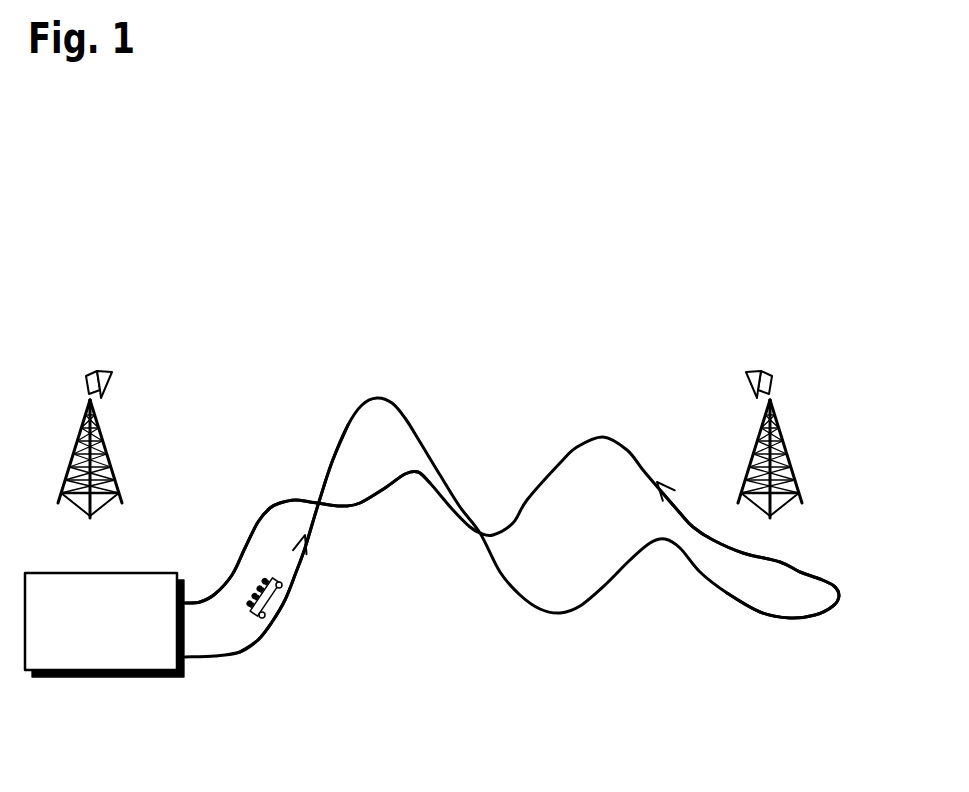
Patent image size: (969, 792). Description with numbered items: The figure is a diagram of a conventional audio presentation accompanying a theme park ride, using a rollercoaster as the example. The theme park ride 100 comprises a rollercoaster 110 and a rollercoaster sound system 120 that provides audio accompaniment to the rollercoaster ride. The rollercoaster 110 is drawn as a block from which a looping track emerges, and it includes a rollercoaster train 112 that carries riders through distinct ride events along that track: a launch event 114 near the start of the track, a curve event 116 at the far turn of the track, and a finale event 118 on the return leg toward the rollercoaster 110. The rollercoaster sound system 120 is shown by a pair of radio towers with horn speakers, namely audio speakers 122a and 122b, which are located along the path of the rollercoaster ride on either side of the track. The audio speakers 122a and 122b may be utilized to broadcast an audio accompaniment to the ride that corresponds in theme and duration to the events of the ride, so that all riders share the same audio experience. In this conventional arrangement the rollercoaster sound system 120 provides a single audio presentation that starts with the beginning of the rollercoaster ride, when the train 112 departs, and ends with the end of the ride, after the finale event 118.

The theme park ride 100 is at (768, 98).
The rollercoaster 110 is at (117, 680).
The rollercoaster train 112 is at (263, 620).
The launch event 114 is at (325, 592).
The curve event 116 is at (867, 627).
The finale event 118 is at (239, 560).
The rollercoaster sound system 120 is at (535, 287).
The audio speaker 122a is at (107, 378).
The audio speaker 122b is at (748, 378).